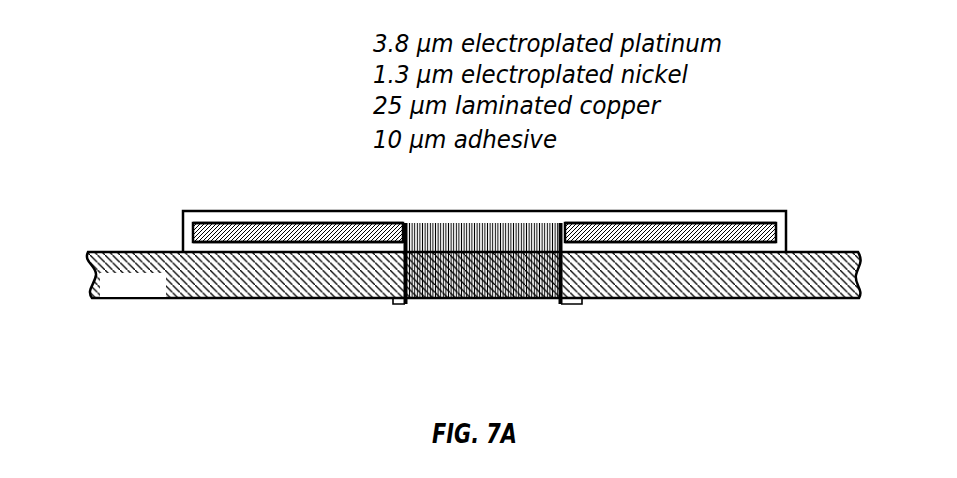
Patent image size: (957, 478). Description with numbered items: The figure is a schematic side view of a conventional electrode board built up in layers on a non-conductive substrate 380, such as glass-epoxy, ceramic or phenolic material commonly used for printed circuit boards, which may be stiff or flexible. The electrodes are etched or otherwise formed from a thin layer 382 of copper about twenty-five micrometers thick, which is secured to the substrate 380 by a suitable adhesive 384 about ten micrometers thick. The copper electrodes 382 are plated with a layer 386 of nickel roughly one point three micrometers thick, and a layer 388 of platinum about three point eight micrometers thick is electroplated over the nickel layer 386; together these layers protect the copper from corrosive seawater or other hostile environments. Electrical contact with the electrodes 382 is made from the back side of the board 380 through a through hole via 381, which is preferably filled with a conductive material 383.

The substrate 380 is at (92, 274).
The through hole via 381 is at (557, 299).
The copper layer 382 is at (281, 223).
The conductive material 383 is at (427, 298).
The adhesive 384 is at (306, 238).
The nickel layer 386 is at (255, 218).
The platinum layer 388 is at (228, 211).